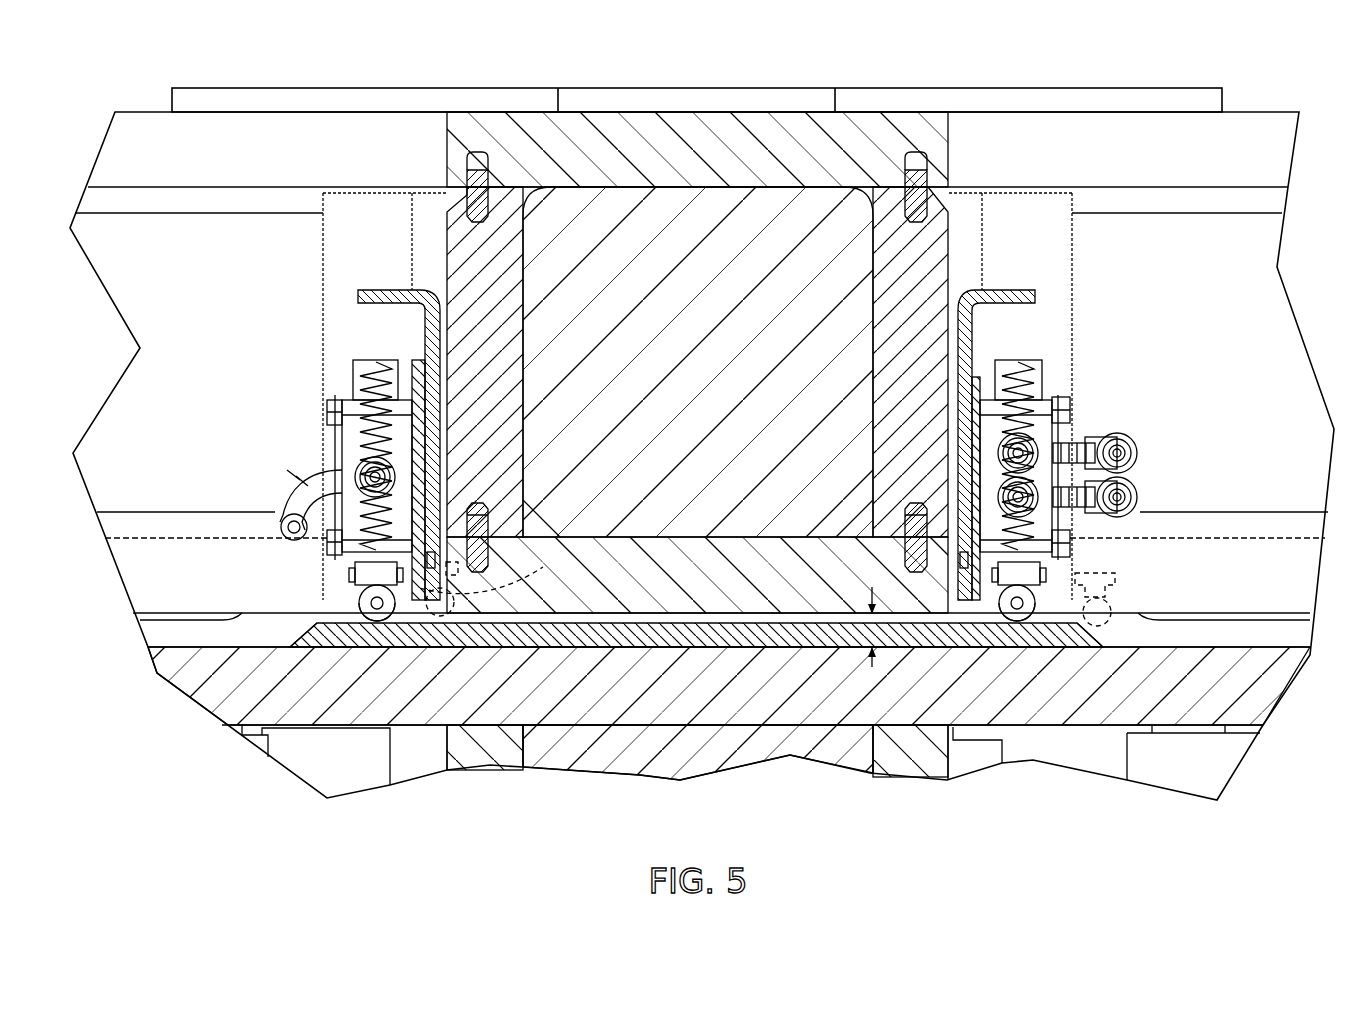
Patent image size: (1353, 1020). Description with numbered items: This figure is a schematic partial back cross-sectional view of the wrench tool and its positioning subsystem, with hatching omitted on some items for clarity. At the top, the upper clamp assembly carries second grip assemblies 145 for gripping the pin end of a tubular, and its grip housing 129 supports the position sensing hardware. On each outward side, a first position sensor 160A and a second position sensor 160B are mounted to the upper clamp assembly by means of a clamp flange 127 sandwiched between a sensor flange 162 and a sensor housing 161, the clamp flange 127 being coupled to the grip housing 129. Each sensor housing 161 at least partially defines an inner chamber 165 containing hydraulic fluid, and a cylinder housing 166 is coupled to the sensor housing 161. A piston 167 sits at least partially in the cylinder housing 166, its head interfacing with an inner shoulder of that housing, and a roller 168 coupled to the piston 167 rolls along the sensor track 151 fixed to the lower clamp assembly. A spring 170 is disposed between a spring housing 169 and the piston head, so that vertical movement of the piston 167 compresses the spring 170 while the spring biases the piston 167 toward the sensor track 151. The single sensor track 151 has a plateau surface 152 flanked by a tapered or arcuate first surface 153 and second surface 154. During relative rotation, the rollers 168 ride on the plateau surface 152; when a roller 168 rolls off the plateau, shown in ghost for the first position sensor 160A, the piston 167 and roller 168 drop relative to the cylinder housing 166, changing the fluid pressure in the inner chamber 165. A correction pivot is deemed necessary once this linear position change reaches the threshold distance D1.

The second grip assemblies 145 is at (703, 215).
The grip housing 129 is at (880, 292).
The sensor flange 162 is at (385, 290).
The clamp flange 127 is at (418, 360).
The spring housing 169 is at (365, 360).
The spring 170 is at (365, 385).
The inner chamber 165 is at (355, 437).
The sensor housing 161 is at (340, 448).
The second position sensor 160B is at (313, 460).
The first position sensor 160A is at (1087, 432).
The piston 167 is at (373, 573).
The cylinder housing 166 is at (357, 590).
The roller 168 is at (377, 623).
The second surface 154 is at (322, 644).
The sensor track 151 is at (718, 650).
The plateau surface 152 is at (715, 622).
The first surface 153 is at (1076, 627).
The threshold distance D1 is at (870, 645).